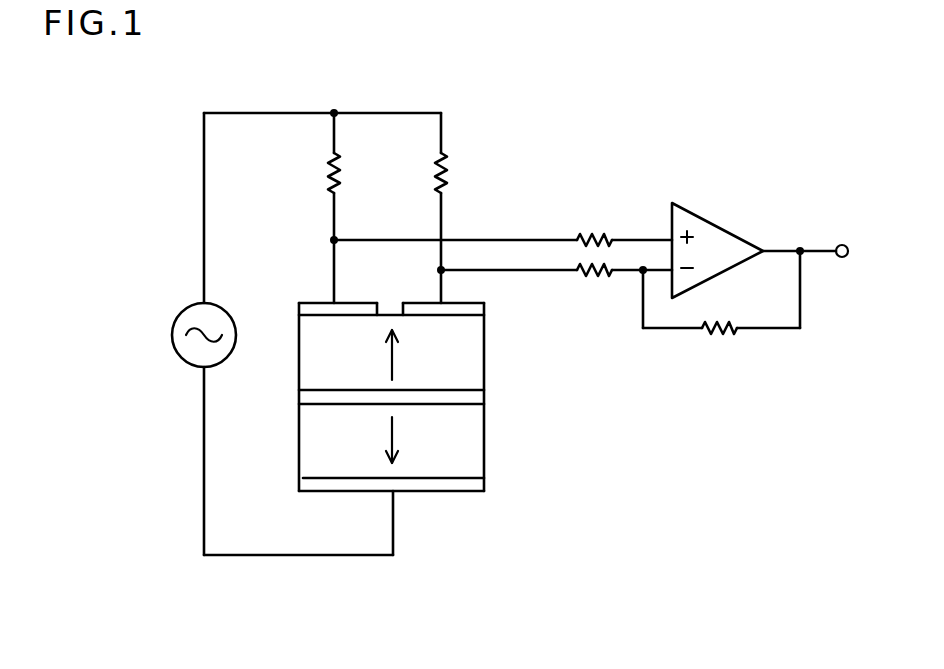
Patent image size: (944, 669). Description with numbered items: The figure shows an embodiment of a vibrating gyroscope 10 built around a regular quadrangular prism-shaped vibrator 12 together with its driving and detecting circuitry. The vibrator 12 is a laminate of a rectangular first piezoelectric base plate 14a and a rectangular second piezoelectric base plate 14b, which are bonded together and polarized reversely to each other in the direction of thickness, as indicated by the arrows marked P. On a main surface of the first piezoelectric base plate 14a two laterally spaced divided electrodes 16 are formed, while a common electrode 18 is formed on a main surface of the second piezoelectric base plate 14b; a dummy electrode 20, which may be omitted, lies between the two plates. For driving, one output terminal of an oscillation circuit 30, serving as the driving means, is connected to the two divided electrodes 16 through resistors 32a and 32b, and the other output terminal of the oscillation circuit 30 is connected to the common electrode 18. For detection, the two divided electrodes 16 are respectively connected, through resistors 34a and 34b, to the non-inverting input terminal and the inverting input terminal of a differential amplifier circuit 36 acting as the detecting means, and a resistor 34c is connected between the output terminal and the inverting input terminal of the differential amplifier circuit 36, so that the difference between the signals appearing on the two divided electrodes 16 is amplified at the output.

The vibrating gyroscope 10 is at (682, 104).
The vibrator 12 is at (418, 420).
The first piezoelectric base plate 14a is at (473, 363).
The second piezoelectric base plate 14b is at (477, 448).
The divided electrodes 16 is at (318, 308).
The common electrode 18 is at (470, 492).
The dummy electrode 20 is at (485, 398).
The oscillation circuit 30 is at (173, 331).
The resistor 32a is at (327, 172).
The resistor 32b is at (447, 175).
The resistor 34a is at (576, 234).
The resistor 34b is at (594, 278).
The resistor 34c is at (718, 336).
The differential amplifier circuit 36 is at (718, 236).